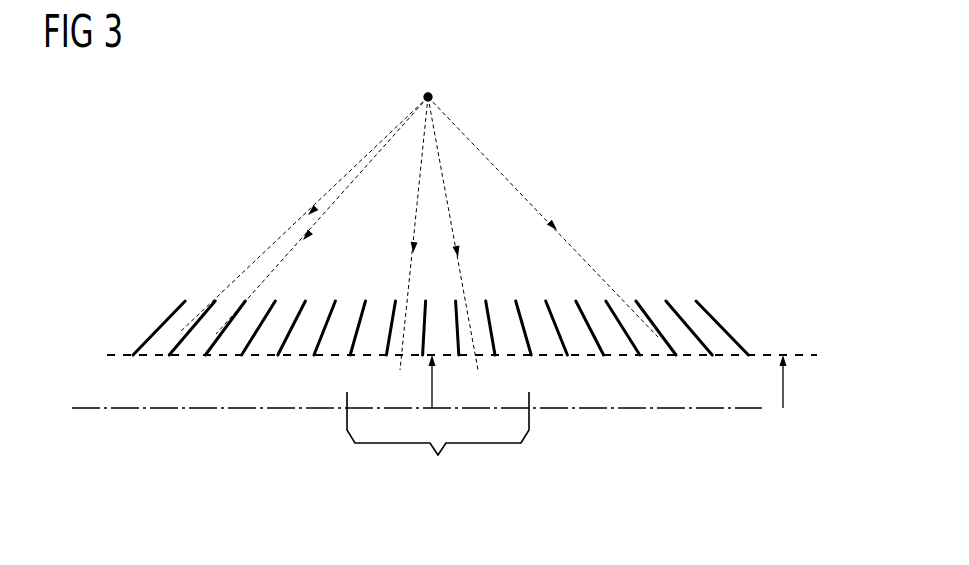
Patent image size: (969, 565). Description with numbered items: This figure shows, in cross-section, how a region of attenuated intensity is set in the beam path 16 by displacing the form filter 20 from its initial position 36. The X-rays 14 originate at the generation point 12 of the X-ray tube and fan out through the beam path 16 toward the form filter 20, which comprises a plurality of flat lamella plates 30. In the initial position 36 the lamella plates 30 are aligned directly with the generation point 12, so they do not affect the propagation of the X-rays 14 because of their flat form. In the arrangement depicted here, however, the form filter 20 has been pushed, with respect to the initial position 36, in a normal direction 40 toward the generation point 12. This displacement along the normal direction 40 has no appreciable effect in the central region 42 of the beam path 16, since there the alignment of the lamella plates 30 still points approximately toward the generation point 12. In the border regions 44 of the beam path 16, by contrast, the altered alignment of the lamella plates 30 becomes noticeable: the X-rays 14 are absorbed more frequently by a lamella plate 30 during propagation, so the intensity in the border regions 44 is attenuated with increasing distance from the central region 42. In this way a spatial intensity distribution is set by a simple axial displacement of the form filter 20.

The generation point 12 is at (428, 92).
The X-rays 14 is at (331, 205).
The beam path 16 is at (419, 207).
The form filter 20 is at (460, 294).
The lamella plates 30 is at (707, 314).
The initial position 36 is at (417, 451).
The normal direction 40 is at (434, 388).
The central region 42 is at (438, 443).
The border regions 44 is at (352, 435).